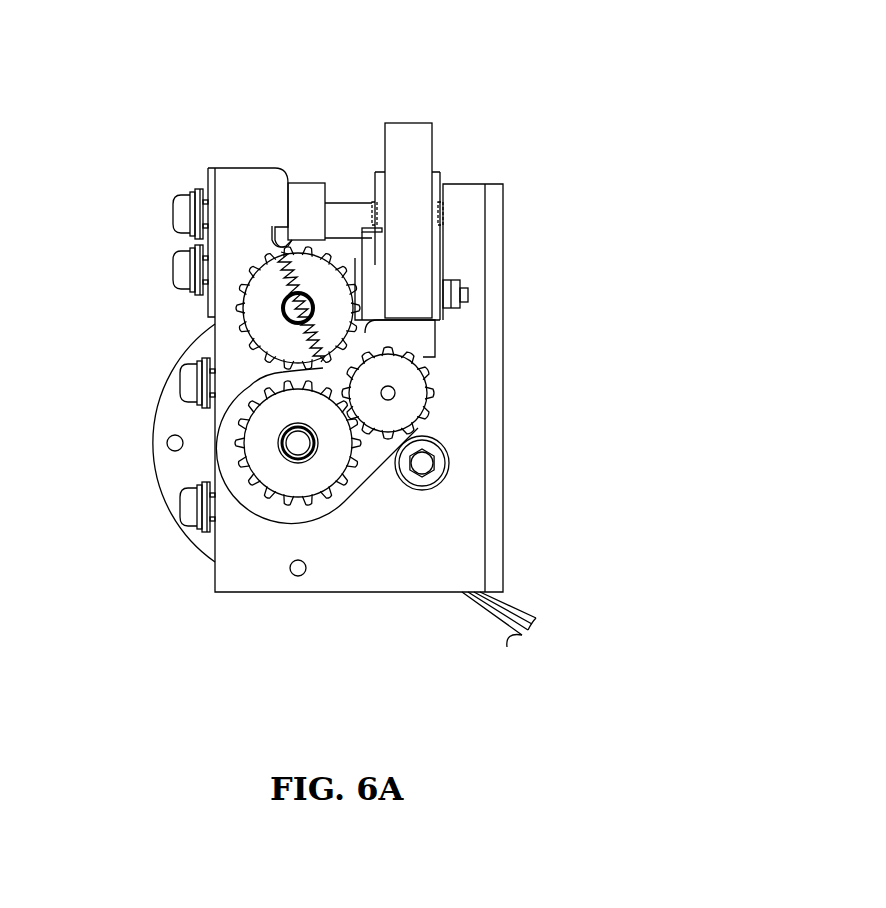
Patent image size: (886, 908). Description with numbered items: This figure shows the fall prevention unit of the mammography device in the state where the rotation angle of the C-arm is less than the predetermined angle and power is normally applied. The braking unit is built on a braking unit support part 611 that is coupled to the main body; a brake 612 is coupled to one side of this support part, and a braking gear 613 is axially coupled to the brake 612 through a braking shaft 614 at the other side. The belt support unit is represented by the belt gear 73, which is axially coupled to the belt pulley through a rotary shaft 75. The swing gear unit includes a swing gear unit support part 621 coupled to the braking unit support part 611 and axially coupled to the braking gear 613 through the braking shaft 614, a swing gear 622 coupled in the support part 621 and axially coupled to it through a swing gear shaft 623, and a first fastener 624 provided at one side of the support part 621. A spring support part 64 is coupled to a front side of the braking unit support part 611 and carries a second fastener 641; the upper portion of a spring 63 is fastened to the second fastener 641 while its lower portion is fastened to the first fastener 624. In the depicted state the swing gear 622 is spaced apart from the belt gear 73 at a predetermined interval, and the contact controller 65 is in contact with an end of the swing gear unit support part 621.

The spring 63 is at (328, 240).
The spring support part 64 is at (247, 172).
The second fastener 641 is at (293, 256).
The contact controller 65 is at (415, 130).
The belt gear 73 is at (247, 282).
The rotary shaft 75 is at (283, 303).
The braking unit support part 611 is at (335, 572).
The brake 612 is at (170, 407).
The braking gear 613 is at (226, 424).
The braking shaft 614 is at (296, 448).
The swing gear unit support part 621 is at (365, 462).
The swing gear 622 is at (433, 432).
The swing gear shaft 623 is at (398, 394).
The first fastener 624 is at (250, 392).